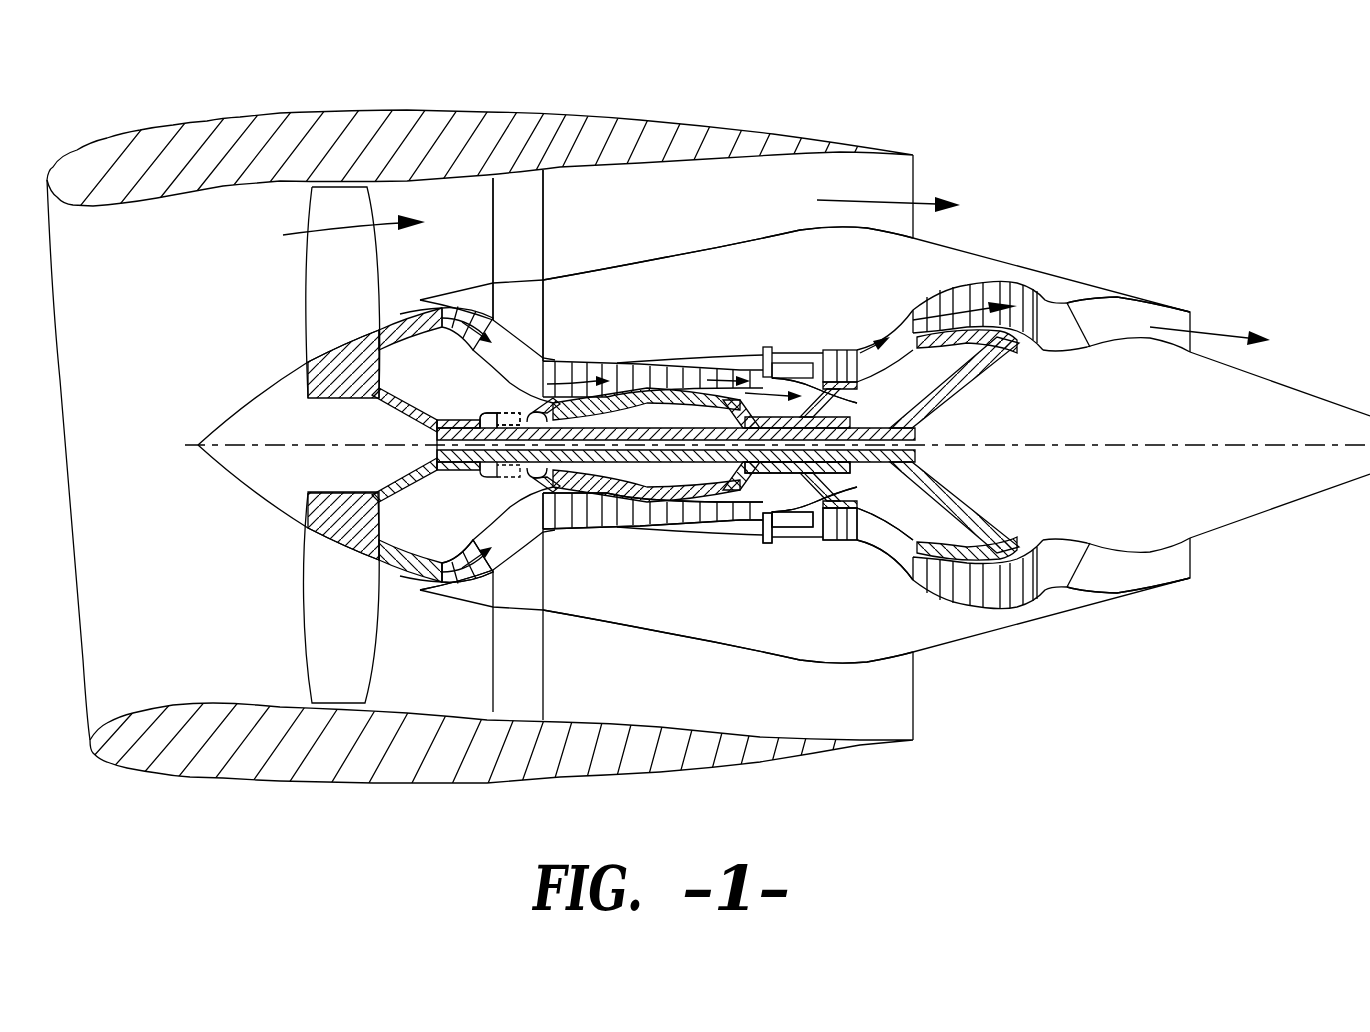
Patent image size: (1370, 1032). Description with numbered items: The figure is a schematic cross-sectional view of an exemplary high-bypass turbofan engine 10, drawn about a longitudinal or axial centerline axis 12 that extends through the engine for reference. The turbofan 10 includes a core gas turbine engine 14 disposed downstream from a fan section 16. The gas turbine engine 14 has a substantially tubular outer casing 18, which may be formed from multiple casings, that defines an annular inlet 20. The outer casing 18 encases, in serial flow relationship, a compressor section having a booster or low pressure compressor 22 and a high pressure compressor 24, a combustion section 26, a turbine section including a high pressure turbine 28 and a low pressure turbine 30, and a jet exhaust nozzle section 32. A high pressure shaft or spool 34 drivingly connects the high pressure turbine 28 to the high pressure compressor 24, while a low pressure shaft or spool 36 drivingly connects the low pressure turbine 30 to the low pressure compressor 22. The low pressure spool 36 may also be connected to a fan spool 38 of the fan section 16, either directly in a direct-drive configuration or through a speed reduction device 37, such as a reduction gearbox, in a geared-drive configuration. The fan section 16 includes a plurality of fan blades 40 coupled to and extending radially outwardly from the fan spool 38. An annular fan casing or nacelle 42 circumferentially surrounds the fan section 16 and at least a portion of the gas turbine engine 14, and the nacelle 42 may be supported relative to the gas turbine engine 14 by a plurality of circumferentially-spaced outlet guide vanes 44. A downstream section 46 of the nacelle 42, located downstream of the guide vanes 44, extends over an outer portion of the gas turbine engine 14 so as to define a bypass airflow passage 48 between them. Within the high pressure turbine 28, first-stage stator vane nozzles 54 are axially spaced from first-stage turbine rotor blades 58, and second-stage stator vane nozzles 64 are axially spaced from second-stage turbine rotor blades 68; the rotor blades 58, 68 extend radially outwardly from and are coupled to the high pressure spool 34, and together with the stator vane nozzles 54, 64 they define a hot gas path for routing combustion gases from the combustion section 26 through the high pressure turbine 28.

The turbofan engine 10 is at (1177, 181).
The longitudinal centerline axis 12 is at (1100, 443).
The gas turbine engine 14 is at (739, 304).
The fan section 16 is at (391, 88).
The outer casing 18 is at (747, 652).
The annular inlet 20 is at (433, 577).
The low pressure compressor 22 is at (498, 547).
The high pressure compressor 24 is at (578, 527).
The combustion section 26 is at (784, 525).
The high pressure turbine 28 is at (865, 530).
The low pressure turbine 30 is at (1018, 613).
The jet exhaust nozzle section 32 is at (1193, 318).
The high pressure shaft 34 is at (843, 387).
The low pressure shaft 36 is at (485, 413).
The speed reduction device 37 is at (508, 412).
The fan spool 38 is at (335, 403).
The fan blades 40 is at (303, 643).
The nacelle 42 is at (380, 787).
The outlet guide vanes 44 is at (545, 197).
The downstream section of the nacelle 46 is at (716, 114).
The bypass airflow passage 48 is at (702, 220).
The stator vane nozzles 54 is at (812, 546).
The turbine rotor blades 58 is at (823, 548).
The stator vane nozzles 64 is at (837, 547).
The turbine rotor blades 68 is at (850, 550).